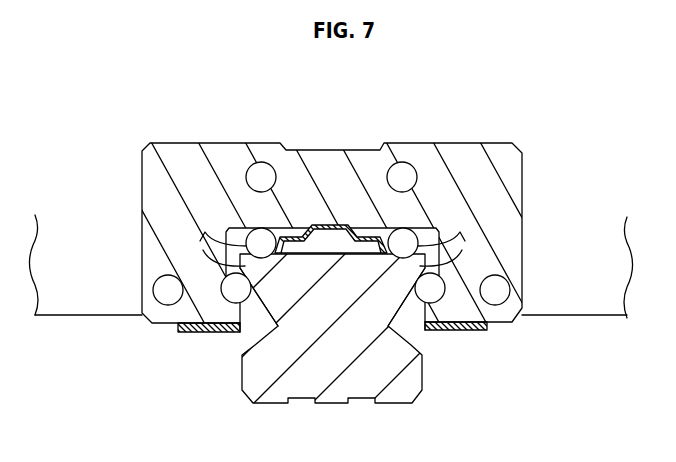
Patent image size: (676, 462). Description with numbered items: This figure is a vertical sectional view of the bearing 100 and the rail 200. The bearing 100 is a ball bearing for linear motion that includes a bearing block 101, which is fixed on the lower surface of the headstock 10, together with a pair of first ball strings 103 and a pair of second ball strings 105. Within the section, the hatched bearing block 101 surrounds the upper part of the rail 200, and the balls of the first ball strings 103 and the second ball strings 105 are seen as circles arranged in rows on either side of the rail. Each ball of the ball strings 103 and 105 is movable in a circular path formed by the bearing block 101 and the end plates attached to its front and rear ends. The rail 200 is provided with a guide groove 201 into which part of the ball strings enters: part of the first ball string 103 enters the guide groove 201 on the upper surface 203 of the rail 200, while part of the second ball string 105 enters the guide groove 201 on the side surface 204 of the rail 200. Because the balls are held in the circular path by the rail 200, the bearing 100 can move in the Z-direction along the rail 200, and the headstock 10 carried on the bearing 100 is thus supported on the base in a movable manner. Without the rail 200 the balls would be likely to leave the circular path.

The headstock 10 is at (582, 316).
The bearing 100 is at (339, 274).
The bearing block 101 is at (502, 147).
The first ball string 103 is at (261, 170).
The second ball string 105 is at (160, 291).
The rail 200 is at (325, 404).
The guide groove 201 is at (212, 228).
The upper surface 203 is at (316, 246).
The side surface 204 is at (414, 268).